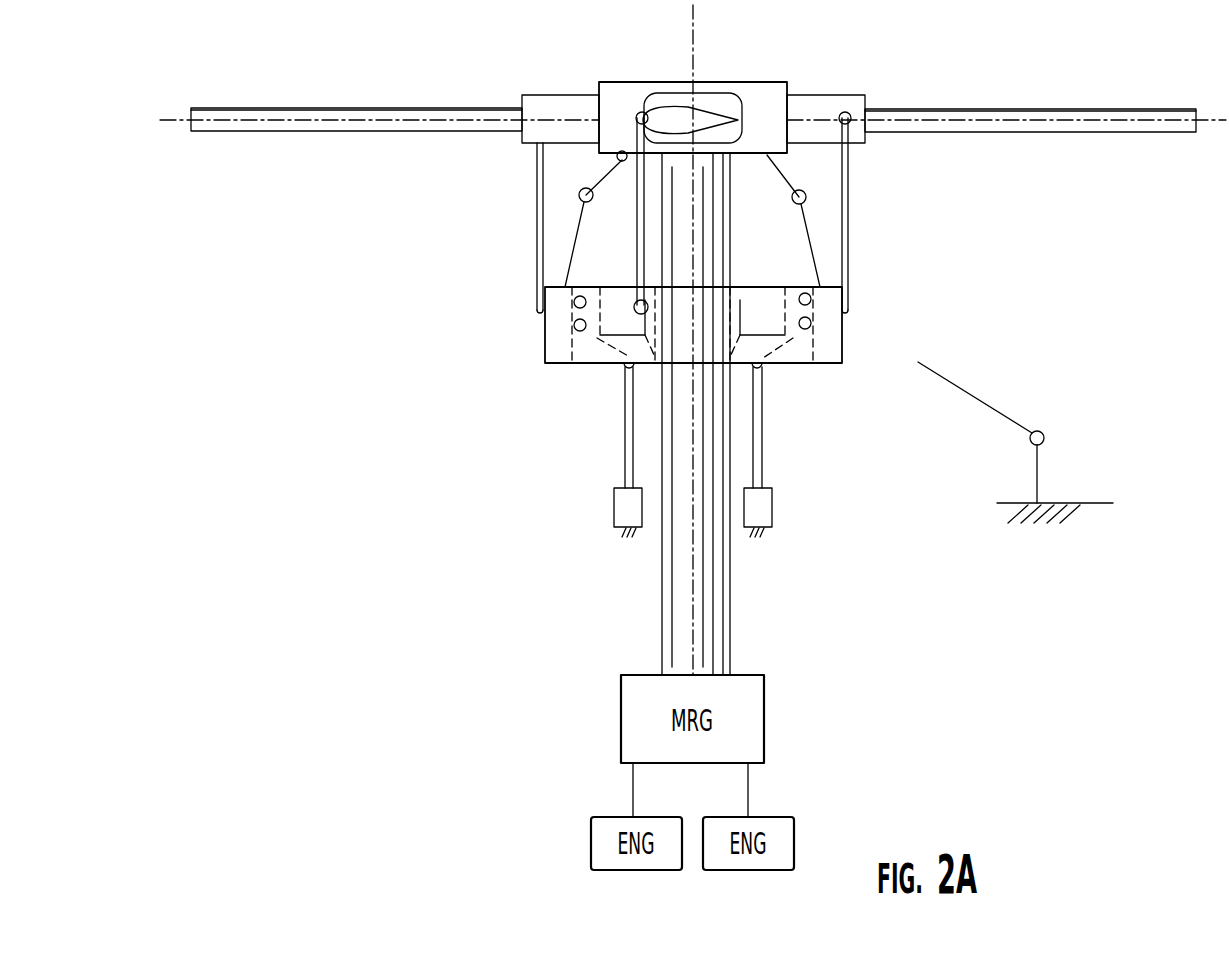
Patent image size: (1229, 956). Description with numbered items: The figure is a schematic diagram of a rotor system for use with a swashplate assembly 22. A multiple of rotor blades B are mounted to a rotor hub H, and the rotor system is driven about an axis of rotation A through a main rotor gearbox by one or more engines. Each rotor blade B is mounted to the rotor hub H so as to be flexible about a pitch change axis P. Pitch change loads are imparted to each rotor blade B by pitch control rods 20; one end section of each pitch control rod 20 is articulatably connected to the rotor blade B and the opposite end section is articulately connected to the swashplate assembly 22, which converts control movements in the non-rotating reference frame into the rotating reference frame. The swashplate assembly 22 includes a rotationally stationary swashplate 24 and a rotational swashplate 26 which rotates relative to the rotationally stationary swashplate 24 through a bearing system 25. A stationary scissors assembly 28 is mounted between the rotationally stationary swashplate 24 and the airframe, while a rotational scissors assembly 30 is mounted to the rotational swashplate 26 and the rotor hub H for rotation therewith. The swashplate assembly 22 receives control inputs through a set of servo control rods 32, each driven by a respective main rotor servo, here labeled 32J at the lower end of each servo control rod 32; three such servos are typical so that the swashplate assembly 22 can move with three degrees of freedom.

The axis of rotation A is at (693, 38).
The rotor hub H is at (763, 92).
The rotor blade B is at (385, 108).
The pitch change axis P is at (288, 122).
The pitch control rod 20 is at (537, 205).
The swashplate assembly 22 is at (900, 292).
The rotationally stationary swashplate 24 is at (763, 342).
The bearing system 25 is at (813, 313).
The rotational swashplate 26 is at (545, 333).
The stationary scissors assembly 28 is at (1002, 413).
The rotational scissors assembly 30 is at (807, 227).
The servo control rod 32 is at (623, 433).
The servo actuator 32J is at (620, 507).